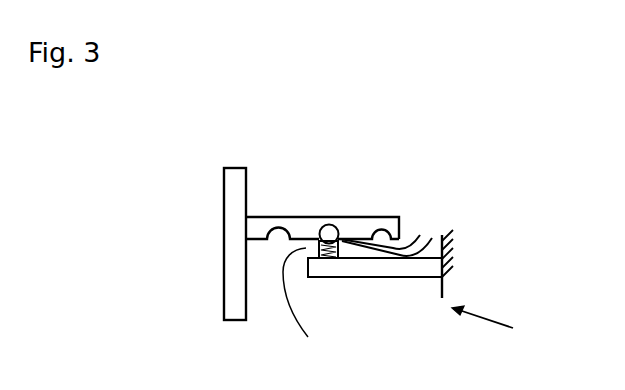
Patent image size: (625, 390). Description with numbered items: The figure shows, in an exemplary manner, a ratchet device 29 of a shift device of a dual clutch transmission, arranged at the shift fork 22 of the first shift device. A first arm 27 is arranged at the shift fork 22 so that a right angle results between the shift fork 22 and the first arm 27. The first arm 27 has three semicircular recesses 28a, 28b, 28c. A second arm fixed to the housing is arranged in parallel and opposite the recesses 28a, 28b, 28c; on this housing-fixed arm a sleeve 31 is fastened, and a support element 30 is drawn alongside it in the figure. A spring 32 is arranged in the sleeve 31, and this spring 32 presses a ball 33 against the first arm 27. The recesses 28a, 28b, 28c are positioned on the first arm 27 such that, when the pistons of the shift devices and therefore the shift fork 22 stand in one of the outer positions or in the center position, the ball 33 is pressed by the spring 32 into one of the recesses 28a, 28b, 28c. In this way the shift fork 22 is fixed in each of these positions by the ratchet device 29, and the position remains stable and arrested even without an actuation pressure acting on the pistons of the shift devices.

The shift fork 22 is at (223, 190).
The first arm 27 is at (401, 215).
The semicircular recess 28a is at (287, 236).
The semicircular recess 28b is at (432, 238).
The semicircular recess 28c is at (420, 235).
The ratchet device 29 is at (503, 326).
The support bar 30 is at (398, 277).
The sleeve 31 is at (310, 302).
The spring 32 is at (333, 252).
The ball 33 is at (329, 234).